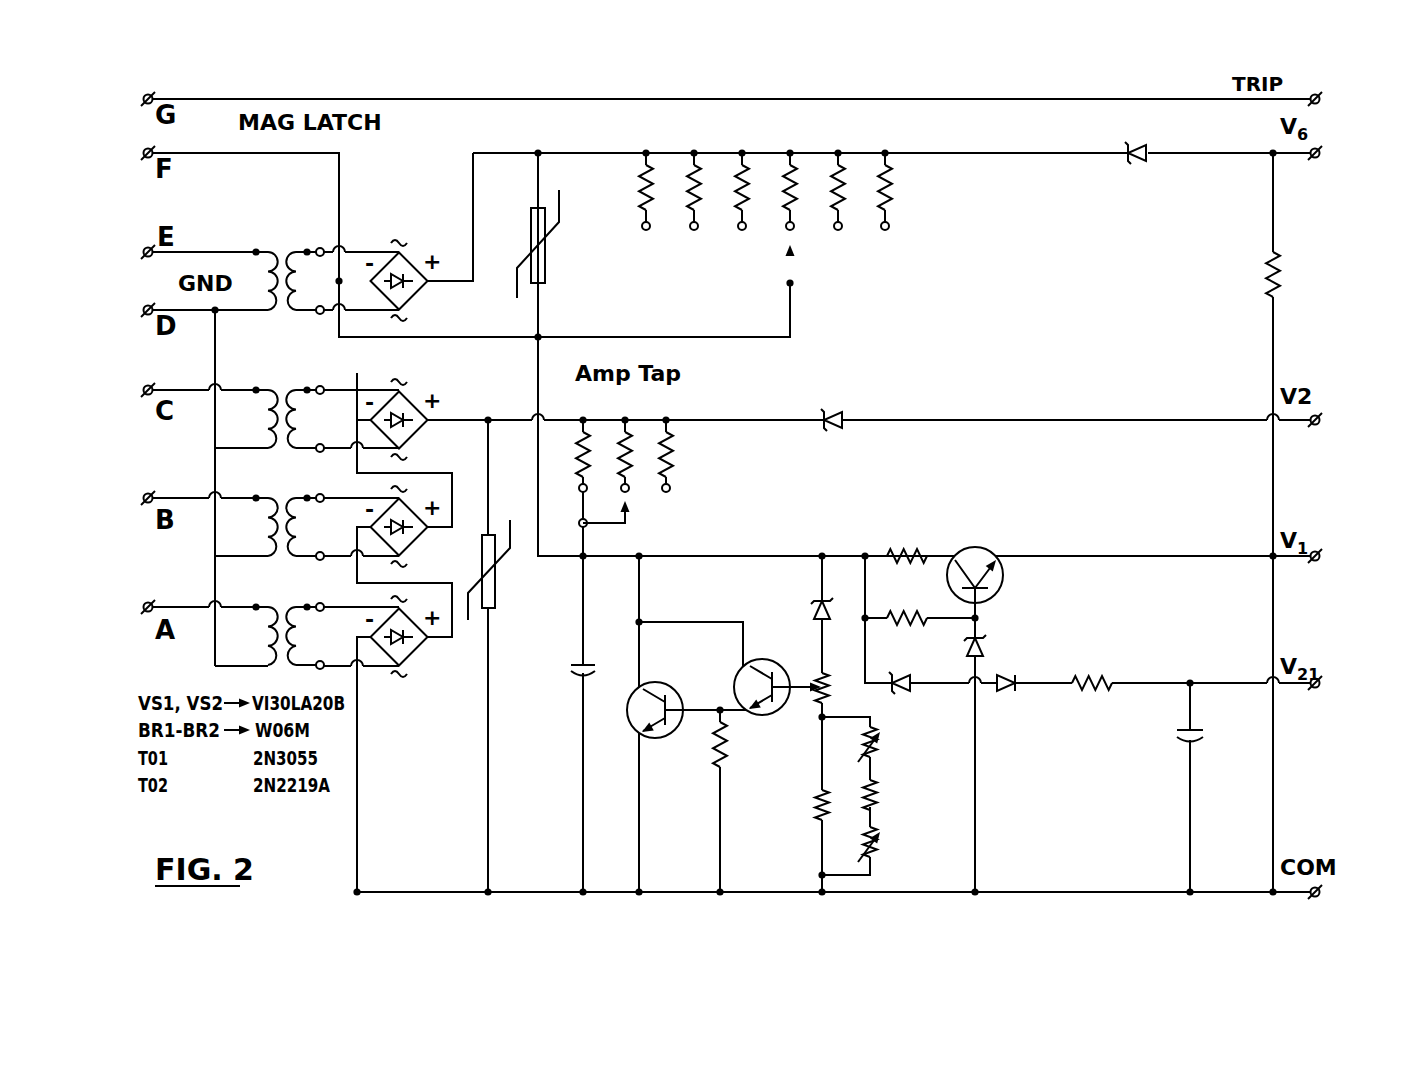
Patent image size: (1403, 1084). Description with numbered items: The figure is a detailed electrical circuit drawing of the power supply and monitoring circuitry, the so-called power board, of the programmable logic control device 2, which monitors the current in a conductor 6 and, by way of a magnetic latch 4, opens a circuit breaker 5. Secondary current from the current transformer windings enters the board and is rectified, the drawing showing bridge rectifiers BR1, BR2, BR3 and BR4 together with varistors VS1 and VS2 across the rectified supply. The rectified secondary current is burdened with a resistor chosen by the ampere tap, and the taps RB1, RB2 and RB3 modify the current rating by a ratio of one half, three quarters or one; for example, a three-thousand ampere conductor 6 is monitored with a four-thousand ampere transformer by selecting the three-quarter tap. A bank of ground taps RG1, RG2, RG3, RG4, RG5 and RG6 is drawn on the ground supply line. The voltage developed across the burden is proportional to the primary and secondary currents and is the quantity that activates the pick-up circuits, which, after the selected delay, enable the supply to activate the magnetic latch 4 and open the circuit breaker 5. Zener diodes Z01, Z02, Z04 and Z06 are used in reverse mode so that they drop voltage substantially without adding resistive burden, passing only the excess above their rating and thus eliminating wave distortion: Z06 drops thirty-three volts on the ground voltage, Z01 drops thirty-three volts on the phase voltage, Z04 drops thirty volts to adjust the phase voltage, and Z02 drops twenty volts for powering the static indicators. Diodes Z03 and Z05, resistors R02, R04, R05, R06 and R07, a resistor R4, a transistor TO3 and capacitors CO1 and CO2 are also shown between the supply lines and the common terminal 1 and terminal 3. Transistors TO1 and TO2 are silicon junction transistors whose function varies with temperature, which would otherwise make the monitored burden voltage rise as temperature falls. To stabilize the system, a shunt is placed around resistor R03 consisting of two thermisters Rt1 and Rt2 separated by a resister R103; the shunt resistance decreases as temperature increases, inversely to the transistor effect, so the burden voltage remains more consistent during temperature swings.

The COM terminal 1 is at (1327, 893).
The programmable logic control device 2 is at (1327, 684).
The V1 terminal 3 is at (1327, 557).
The magnetic latch 4 is at (1327, 421).
The circuit breaker 5 is at (1327, 154).
The conductor 6 is at (1327, 100).
The bridge rectifier BR1 is at (417, 640).
The bridge rectifier BR2 is at (417, 526).
The bridge rectifier BR3 is at (417, 419).
The bridge rectifier BR4 is at (417, 280).
The varistor VS1 is at (559, 244).
The varistor VS2 is at (508, 570).
The ground tap resistor RG1 is at (646, 199).
The ground tap resistor RG2 is at (694, 199).
The ground tap resistor RG3 is at (742, 199).
The ground tap resistor RG4 is at (786, 205).
The ground tap resistor RG5 is at (838, 205).
The ground tap resistor RG6 is at (885, 205).
The ampere tap RB1 is at (585, 457).
The ampere tap RB2 is at (632, 444).
The ampere tap RB3 is at (675, 444).
The Zener diode Z01 is at (836, 456).
The Zener diode Z02 is at (934, 695).
The zener diode Z03 is at (1042, 633).
The Zener diode Z04 is at (778, 593).
The diode Z05 is at (1014, 670).
The Zener diode Z06 is at (1140, 189).
The resistor R02 is at (1102, 686).
The resistor R03 is at (803, 808).
The resistor R04 is at (751, 751).
The resistor R05 is at (909, 532).
The resistor R06 is at (920, 621).
The resistor R07 is at (1250, 274).
The potentiometer R4 is at (836, 691).
The thermister Rt1 is at (885, 844).
The thermister Rt2 is at (885, 753).
The resister R103 is at (894, 797).
The transistor TO1 is at (656, 696).
The transistor TO2 is at (762, 673).
The transistor TO3 is at (1001, 552).
The capacitor CO1 is at (553, 680).
The capacitor CO2 is at (1213, 745).